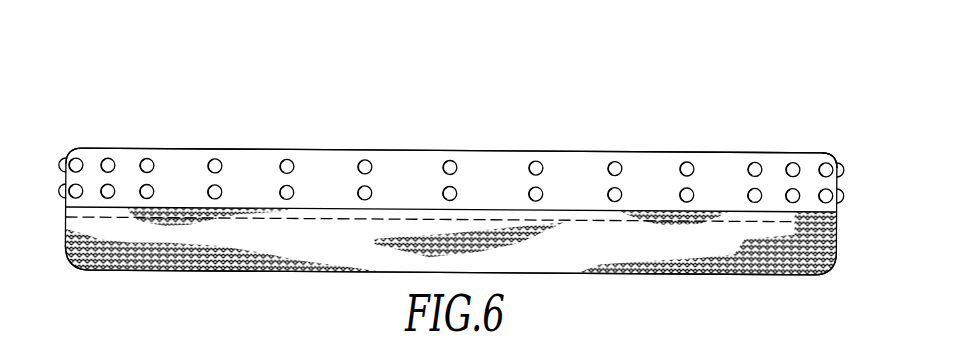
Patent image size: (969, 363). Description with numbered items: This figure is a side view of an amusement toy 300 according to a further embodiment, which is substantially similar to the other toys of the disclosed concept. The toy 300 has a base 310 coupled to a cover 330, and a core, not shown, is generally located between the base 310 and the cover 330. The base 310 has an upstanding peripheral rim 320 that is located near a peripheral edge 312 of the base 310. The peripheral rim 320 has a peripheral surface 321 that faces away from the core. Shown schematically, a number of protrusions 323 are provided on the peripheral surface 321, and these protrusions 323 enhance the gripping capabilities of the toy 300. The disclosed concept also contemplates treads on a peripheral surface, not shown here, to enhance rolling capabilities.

The amusement toy 300 is at (855, 313).
The base 310 is at (710, 167).
The peripheral edge 312 is at (831, 153).
The peripheral rim 320 is at (565, 167).
The peripheral surface 321 is at (477, 167).
The protrusions 323 is at (382, 180).
The cover 330 is at (757, 272).